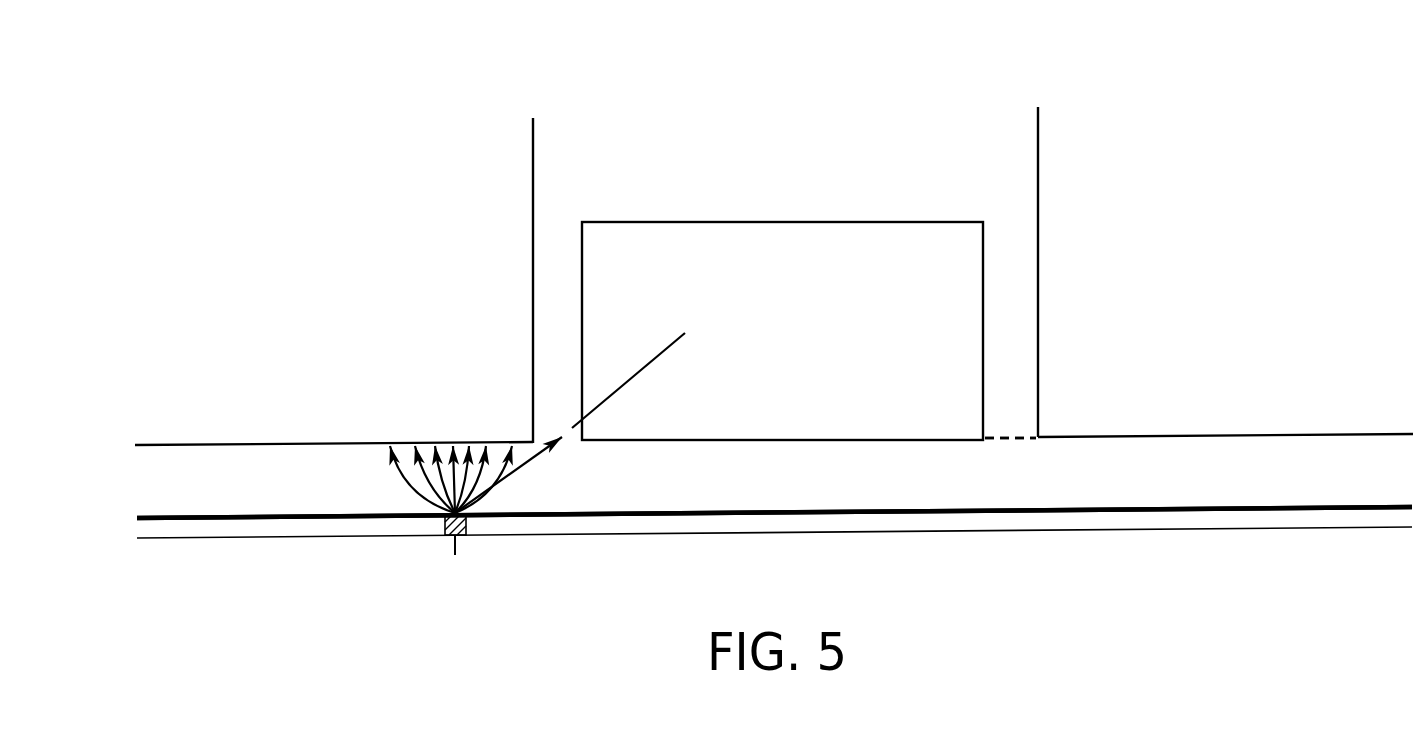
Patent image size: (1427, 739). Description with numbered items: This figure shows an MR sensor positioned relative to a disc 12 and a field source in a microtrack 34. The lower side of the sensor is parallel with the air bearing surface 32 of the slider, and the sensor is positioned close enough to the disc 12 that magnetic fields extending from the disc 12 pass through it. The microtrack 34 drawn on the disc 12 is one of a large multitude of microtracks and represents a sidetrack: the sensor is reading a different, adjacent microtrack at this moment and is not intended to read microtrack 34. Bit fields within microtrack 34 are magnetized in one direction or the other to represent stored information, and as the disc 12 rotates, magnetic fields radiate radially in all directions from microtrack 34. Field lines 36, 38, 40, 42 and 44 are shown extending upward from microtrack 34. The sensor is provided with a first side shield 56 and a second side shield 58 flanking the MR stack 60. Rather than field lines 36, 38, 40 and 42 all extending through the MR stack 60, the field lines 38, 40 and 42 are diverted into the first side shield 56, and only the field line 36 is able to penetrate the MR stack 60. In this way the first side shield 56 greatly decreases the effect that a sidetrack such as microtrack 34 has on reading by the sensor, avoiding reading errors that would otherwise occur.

The disc 12 is at (1293, 527).
The air bearing surface 32 is at (1010, 458).
The microtrack 34 is at (465, 585).
The field line 36 is at (665, 348).
The field line 38 is at (497, 442).
The field line 40 is at (472, 442).
The field line 42 is at (443, 443).
The field line 44 is at (405, 443).
The first side shield 56 is at (534, 183).
The second side shield 58 is at (1038, 148).
The MR stack 60 is at (816, 218).